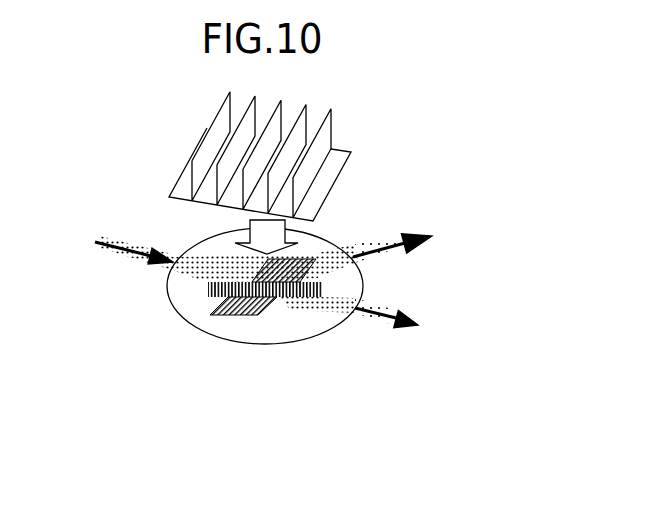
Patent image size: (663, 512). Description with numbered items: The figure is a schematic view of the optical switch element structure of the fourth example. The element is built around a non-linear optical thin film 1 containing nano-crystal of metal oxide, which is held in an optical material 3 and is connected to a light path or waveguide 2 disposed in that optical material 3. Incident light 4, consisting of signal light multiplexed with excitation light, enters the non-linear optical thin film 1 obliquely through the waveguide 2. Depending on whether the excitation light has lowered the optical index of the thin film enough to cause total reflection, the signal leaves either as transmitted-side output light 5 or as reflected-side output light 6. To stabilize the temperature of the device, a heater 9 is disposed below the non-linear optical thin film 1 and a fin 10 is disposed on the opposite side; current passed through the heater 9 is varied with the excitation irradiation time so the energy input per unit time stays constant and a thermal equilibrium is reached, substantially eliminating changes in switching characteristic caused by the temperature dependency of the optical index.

The non-linear optical thin film 1 is at (205, 297).
The waveguide 2 is at (330, 263).
The optical material 3 is at (356, 286).
The incident light 4 is at (130, 252).
The transmitted-side output light 5 is at (368, 315).
The reflected-side output light 6 is at (377, 253).
The heater 9 is at (240, 315).
The fin 10 is at (337, 167).